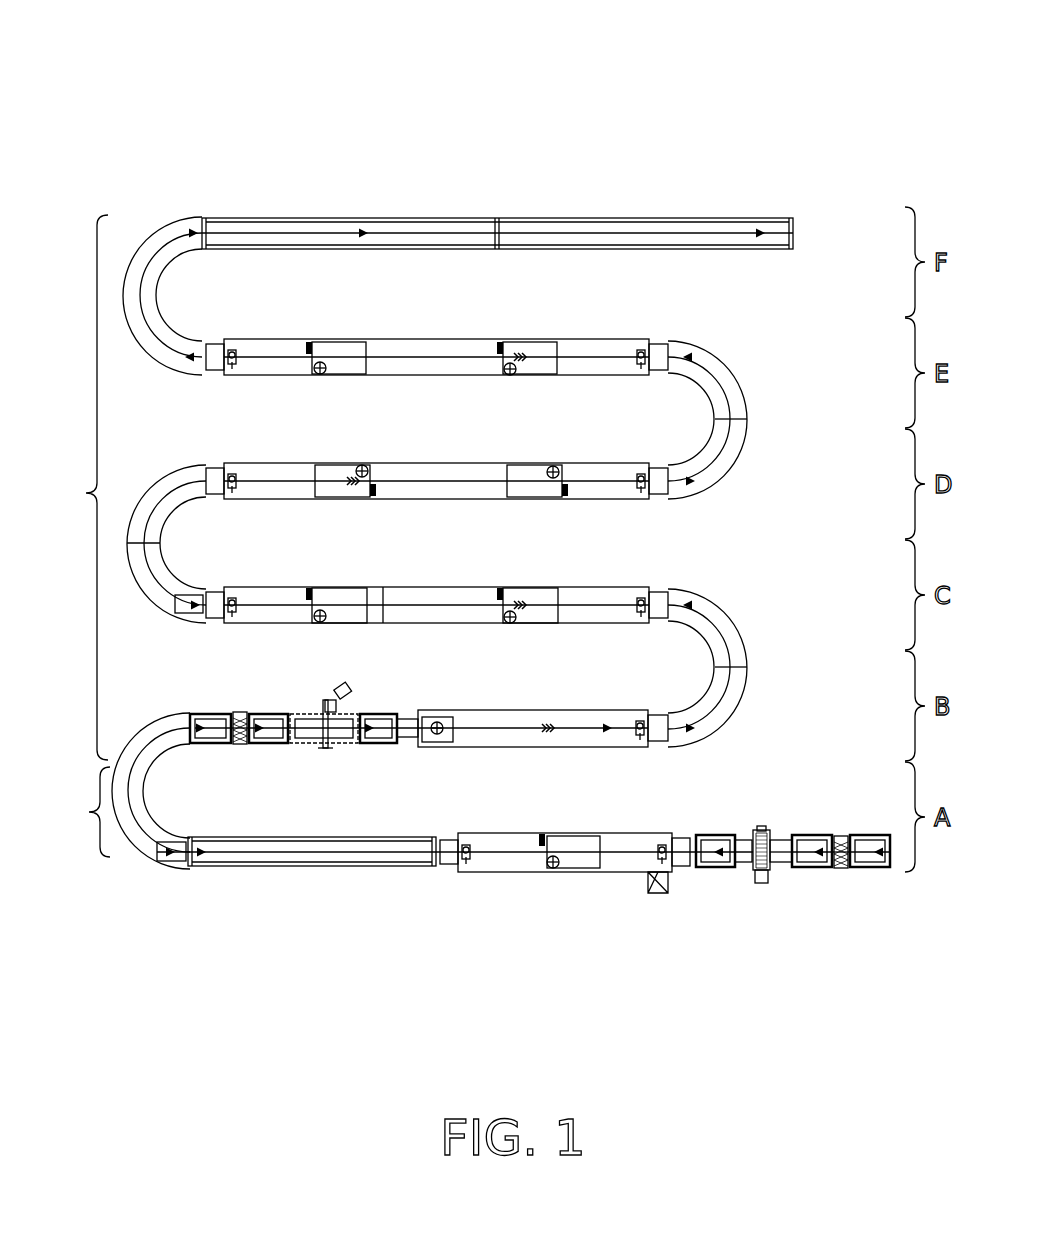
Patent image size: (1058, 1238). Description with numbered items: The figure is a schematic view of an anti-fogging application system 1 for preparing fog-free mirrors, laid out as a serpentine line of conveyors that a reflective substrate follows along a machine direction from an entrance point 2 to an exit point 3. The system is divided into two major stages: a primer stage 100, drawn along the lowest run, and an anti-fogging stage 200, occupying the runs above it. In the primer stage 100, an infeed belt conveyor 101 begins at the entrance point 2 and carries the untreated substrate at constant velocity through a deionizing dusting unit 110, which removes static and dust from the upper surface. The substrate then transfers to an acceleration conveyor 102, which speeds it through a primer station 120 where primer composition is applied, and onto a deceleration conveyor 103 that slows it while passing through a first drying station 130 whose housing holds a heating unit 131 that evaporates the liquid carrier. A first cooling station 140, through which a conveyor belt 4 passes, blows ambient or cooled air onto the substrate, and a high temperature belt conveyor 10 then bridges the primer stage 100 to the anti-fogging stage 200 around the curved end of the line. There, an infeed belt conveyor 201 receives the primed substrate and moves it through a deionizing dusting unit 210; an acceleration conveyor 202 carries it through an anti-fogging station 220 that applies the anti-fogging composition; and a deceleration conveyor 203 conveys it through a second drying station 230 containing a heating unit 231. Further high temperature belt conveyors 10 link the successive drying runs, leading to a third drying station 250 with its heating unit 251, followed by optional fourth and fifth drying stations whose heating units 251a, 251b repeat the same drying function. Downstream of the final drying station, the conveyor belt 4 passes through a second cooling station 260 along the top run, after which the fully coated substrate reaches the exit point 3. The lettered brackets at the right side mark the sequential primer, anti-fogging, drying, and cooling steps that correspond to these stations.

The anti-fogging application system 1 is at (124, 116).
The entrance point 2 is at (898, 866).
The exit point 3 is at (805, 233).
The conveyor belt 4 is at (663, 232).
The high temperature belt conveyor 10 is at (158, 248).
The primer stage 100 is at (479, 864).
The infeed belt conveyor 101 is at (876, 834).
The acceleration conveyor 102 is at (816, 834).
The deceleration conveyor 103 is at (714, 878).
The deionizing dusting unit 110 is at (839, 878).
The primer station 120 is at (759, 892).
The first drying station 130 is at (620, 872).
The heating unit 131 is at (580, 866).
The first cooling station 140 is at (312, 862).
The anti-fogging stage 200 is at (439, 558).
The infeed belt conveyor 201 is at (210, 718).
The acceleration conveyor 202 is at (272, 720).
The deceleration conveyor 203 is at (378, 720).
The deionizing dusting unit 210 is at (241, 705).
The anti-fogging station 220 is at (332, 740).
The second drying station 230 is at (574, 742).
The heating unit 231 is at (446, 722).
The third drying station 250 is at (441, 348).
The heating unit 251 is at (345, 600).
The heating unit 251a is at (340, 481).
The heating unit 251b is at (340, 358).
The second cooling station 260 is at (275, 232).